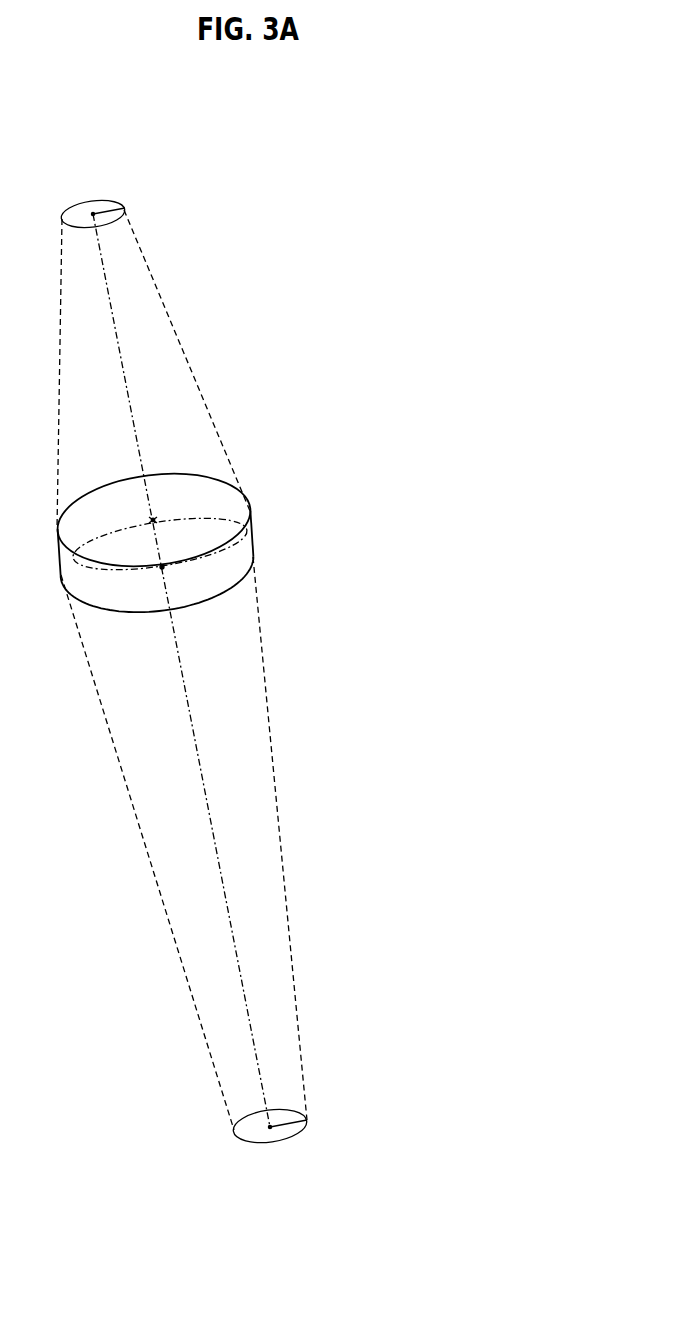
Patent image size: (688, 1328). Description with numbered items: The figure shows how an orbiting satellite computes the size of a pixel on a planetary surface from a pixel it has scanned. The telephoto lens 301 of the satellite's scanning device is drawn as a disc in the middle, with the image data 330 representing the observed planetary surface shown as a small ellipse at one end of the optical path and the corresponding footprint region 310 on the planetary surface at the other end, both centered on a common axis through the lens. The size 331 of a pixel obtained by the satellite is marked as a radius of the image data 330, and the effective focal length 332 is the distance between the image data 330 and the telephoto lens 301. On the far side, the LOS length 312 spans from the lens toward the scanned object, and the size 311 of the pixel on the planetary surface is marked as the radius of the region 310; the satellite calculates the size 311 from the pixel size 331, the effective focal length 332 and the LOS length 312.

The telephoto lens 301 is at (213, 477).
The light receiving region 310 is at (287, 1107).
The size of a pixel on the planetary surface 311 is at (297, 1133).
The LOS length 312 is at (198, 757).
The image data 330 is at (90, 198).
The size of a pixel obtained by the orbiting satellite 331 is at (110, 212).
The effective focal length 332 is at (125, 378).